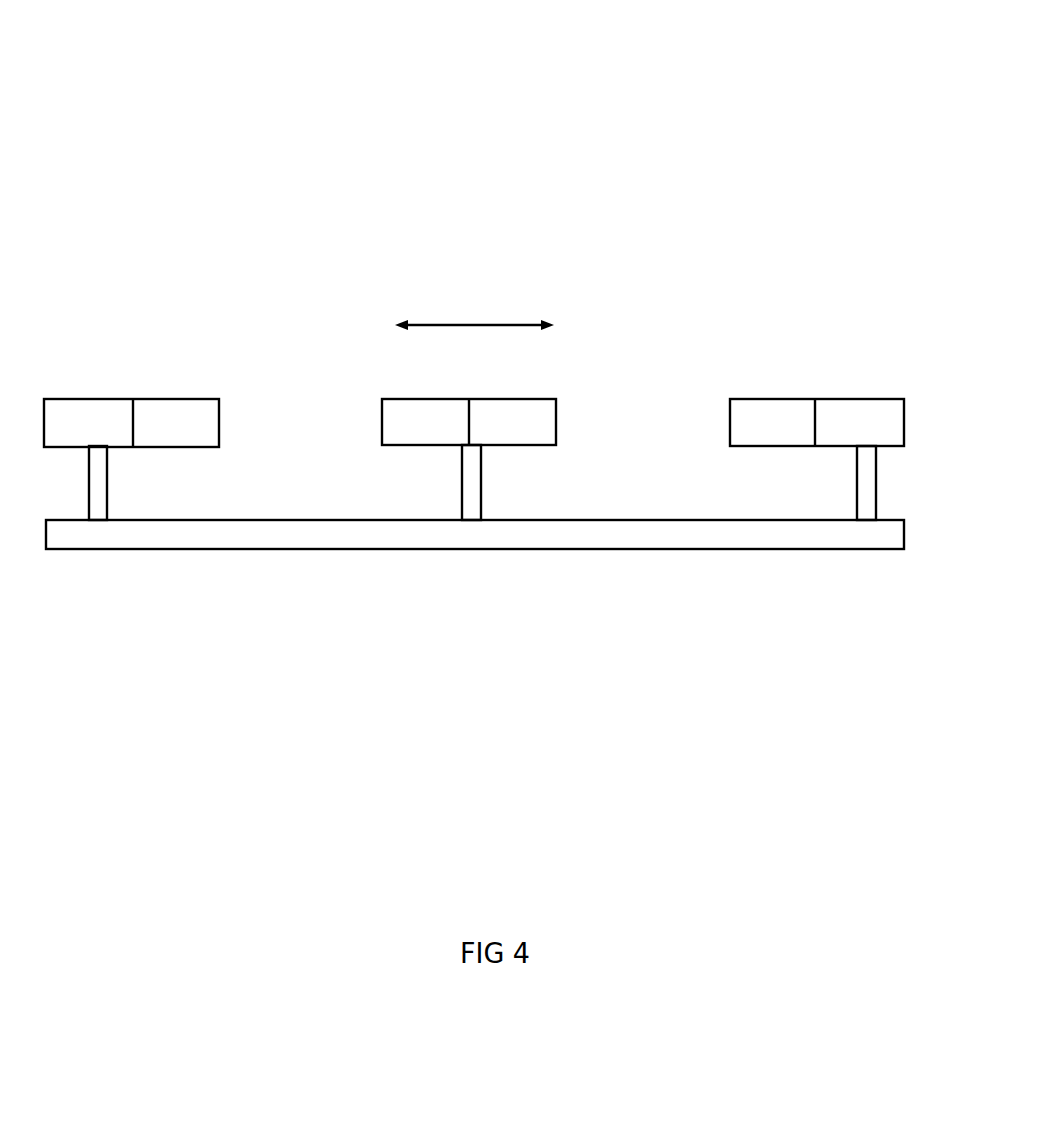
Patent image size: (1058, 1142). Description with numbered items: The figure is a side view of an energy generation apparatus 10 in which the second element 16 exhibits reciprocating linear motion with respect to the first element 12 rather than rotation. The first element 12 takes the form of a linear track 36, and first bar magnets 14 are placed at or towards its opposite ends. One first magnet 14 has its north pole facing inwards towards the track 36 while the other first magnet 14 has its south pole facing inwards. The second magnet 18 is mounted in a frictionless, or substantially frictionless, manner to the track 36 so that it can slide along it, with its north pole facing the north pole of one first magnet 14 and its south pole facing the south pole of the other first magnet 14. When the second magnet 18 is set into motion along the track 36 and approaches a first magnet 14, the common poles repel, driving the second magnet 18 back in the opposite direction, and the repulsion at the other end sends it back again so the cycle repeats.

The energy generation apparatus 10 is at (490, 357).
The first element 12 is at (475, 611).
The linear track 36 is at (734, 553).
The first magnet 14 is at (66, 373).
The second element 16 is at (490, 483).
The second magnet 18 is at (554, 394).